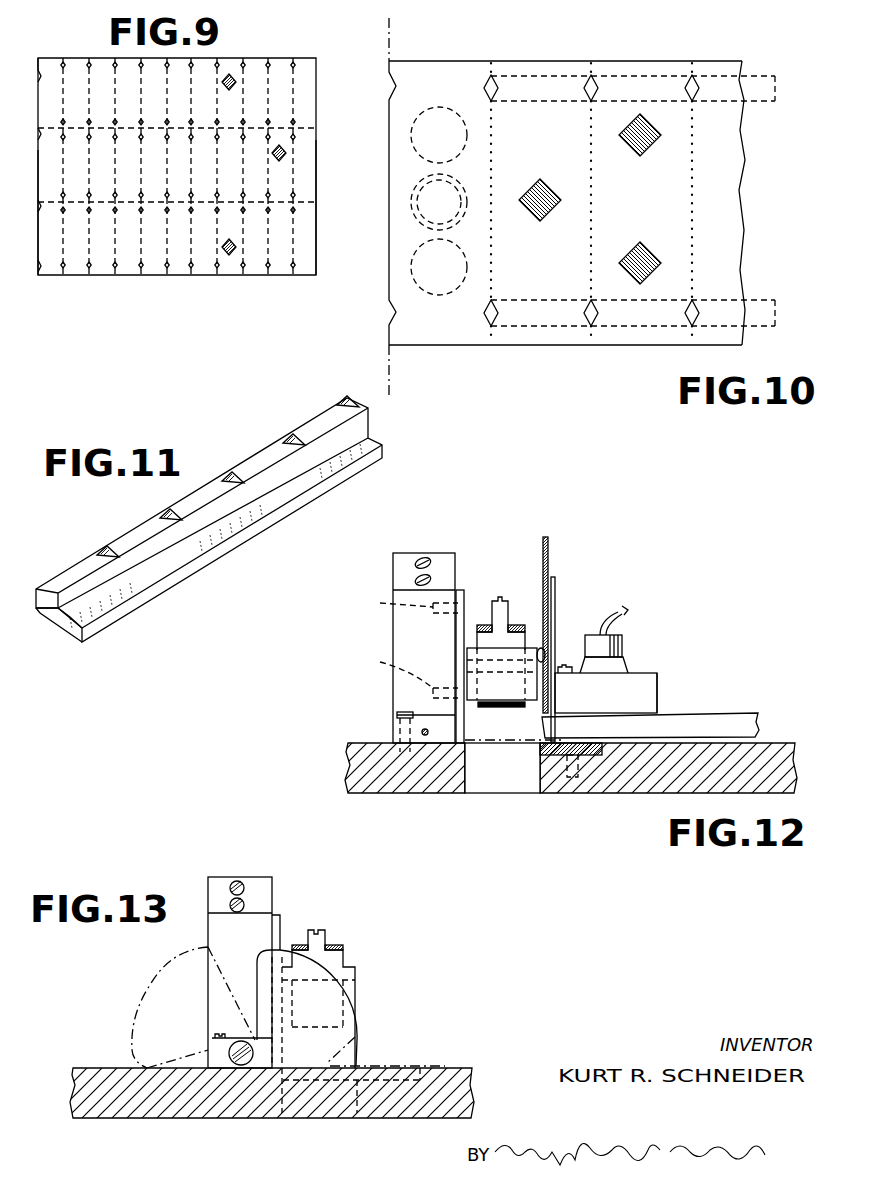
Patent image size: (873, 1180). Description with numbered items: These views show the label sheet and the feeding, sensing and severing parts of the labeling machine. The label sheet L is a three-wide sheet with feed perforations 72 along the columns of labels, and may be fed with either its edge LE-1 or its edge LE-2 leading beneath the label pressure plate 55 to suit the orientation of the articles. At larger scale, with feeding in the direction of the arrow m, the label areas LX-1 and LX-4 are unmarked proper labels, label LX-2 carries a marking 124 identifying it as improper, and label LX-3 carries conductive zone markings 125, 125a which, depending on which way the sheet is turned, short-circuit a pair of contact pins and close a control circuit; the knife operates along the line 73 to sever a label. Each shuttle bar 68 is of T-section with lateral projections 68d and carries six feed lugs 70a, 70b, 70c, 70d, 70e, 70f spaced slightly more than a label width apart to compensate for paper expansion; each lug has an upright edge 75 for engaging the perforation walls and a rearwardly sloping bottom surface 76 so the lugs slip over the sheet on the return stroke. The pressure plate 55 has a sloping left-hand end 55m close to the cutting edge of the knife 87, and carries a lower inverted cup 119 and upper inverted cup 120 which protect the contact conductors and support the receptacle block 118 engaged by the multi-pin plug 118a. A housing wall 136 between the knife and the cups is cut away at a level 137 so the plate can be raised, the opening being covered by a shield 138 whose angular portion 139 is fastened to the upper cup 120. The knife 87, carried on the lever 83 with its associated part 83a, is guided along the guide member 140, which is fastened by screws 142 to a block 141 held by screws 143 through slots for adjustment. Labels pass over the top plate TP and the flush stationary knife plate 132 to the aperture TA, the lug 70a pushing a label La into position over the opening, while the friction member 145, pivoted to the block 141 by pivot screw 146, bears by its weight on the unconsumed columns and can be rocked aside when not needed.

In FIG. 9, the label sheet L is at (125, 277).
In FIG. 13, the label sheet L is at (448, 1063).
In FIG. 9, the leading edge LE-1 is at (38, 258).
In FIG. 9, the leading edge LE-2 is at (316, 174).
In FIG. 9, the feed perforations 72 is at (295, 121).
In FIG. 10, the feed perforations 72 is at (494, 78).
In FIG. 9, the conductive zone marking 125 is at (233, 76).
In FIG. 10, the conductive zone marking 125 is at (628, 148).
In FIG. 9, the conductive zone marking 125a is at (232, 256).
In FIG. 10, the conductive zone marking 125a is at (645, 248).
In FIG. 10, the improper-label marking 124 is at (543, 216).
In FIG. 10, the severing line 73 is at (389, 30).
In FIG. 10, the shuttle bar 68 is at (770, 97).
In FIG. 11, the shuttle bar 68 is at (250, 525).
In FIG. 11, the lateral projections 68d is at (180, 588).
In FIG. 10, the feeding direction arrow m is at (743, 190).
In FIG. 10, the proper label LX-1 is at (447, 330).
In FIG. 10, the improper label LX-2 is at (545, 333).
In FIG. 10, the zone marked label LX-3 is at (650, 336).
In FIG. 10, the proper label LX-4 is at (722, 231).
In FIG. 11, the feed lug 70a is at (36, 588).
In FIG. 11, the feed lug 70b is at (105, 581).
In FIG. 11, the feed lug 70c is at (175, 500).
In FIG. 11, the feed lug 70d is at (231, 474).
In FIG. 11, the feed lug 70e is at (287, 434).
In FIG. 11, the feed lug 70f is at (364, 400).
In FIG. 11, the upright edge 75 is at (100, 552).
In FIG. 11, the rearwardly sloping bottom surface 76 is at (108, 548).
In FIG. 12, the top plate TP is at (360, 745).
In FIG. 13, the top plate TP is at (458, 1082).
In FIG. 12, the aperture TA is at (540, 780).
In FIG. 13, the aperture TA is at (353, 1093).
In FIG. 12, the label La is at (477, 747).
In FIG. 13, the label La is at (355, 1040).
In FIG. 12, the label pressure plate 55 is at (703, 720).
In FIG. 12, the left-hand end of pressure plate 55m is at (515, 766).
In FIG. 12, the stationary knife plate 132 is at (583, 760).
In FIG. 13, the stationary knife plate 132 is at (388, 1067).
In FIG. 12, the block 141 is at (398, 630).
In FIG. 13, the block 141 is at (220, 932).
In FIG. 12, the screws 142 is at (403, 646).
In FIG. 12, the screws 143 is at (430, 556).
In FIG. 13, the screws 143 is at (247, 880).
In FIG. 12, the guide member 140 is at (460, 590).
In FIG. 13, the guide member 140 is at (279, 917).
In FIG. 12, the lever 83 is at (496, 598).
In FIG. 13, the lever 83 is at (318, 932).
In FIG. 12, the jaw pads 83a is at (520, 626).
In FIG. 13, the jaw pads 83a is at (343, 947).
In FIG. 12, the knife 87 is at (533, 704).
In FIG. 12, the housing wall 136 is at (546, 546).
In FIG. 12, the shield 138 is at (553, 580).
In FIG. 12, the cut-away level 137 is at (546, 652).
In FIG. 12, the angular portion 139 is at (564, 678).
In FIG. 12, the receptacle block 118 is at (620, 660).
In FIG. 12, the multi-pin plug 118a is at (622, 640).
In FIG. 12, the lower inverted cup 119 is at (663, 700).
In FIG. 12, the upper inverted cup 120 is at (645, 672).
In FIG. 13, the friction member 145 is at (137, 1012).
In FIG. 13, the pivot screw 146 is at (242, 1067).